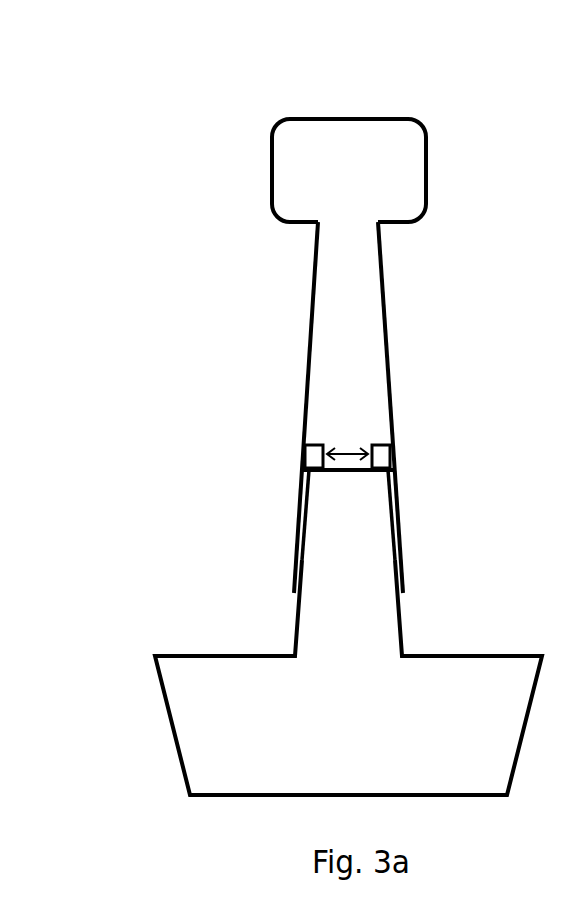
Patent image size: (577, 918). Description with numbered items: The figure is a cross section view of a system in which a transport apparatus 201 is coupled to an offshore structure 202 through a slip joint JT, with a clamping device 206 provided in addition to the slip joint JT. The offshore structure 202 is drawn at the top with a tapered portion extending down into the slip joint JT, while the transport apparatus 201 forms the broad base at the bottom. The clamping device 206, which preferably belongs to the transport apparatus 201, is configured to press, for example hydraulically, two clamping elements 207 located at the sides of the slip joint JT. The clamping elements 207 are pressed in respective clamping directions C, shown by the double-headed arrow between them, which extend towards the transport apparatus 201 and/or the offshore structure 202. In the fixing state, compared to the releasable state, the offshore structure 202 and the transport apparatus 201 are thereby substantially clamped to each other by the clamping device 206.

The transport apparatus 201 is at (207, 710).
The offshore structure 202 is at (318, 132).
The clamping device 206 is at (419, 447).
The clamping elements 207 is at (313, 457).
The clamping directions C is at (347, 447).
The slip joint JT is at (269, 538).